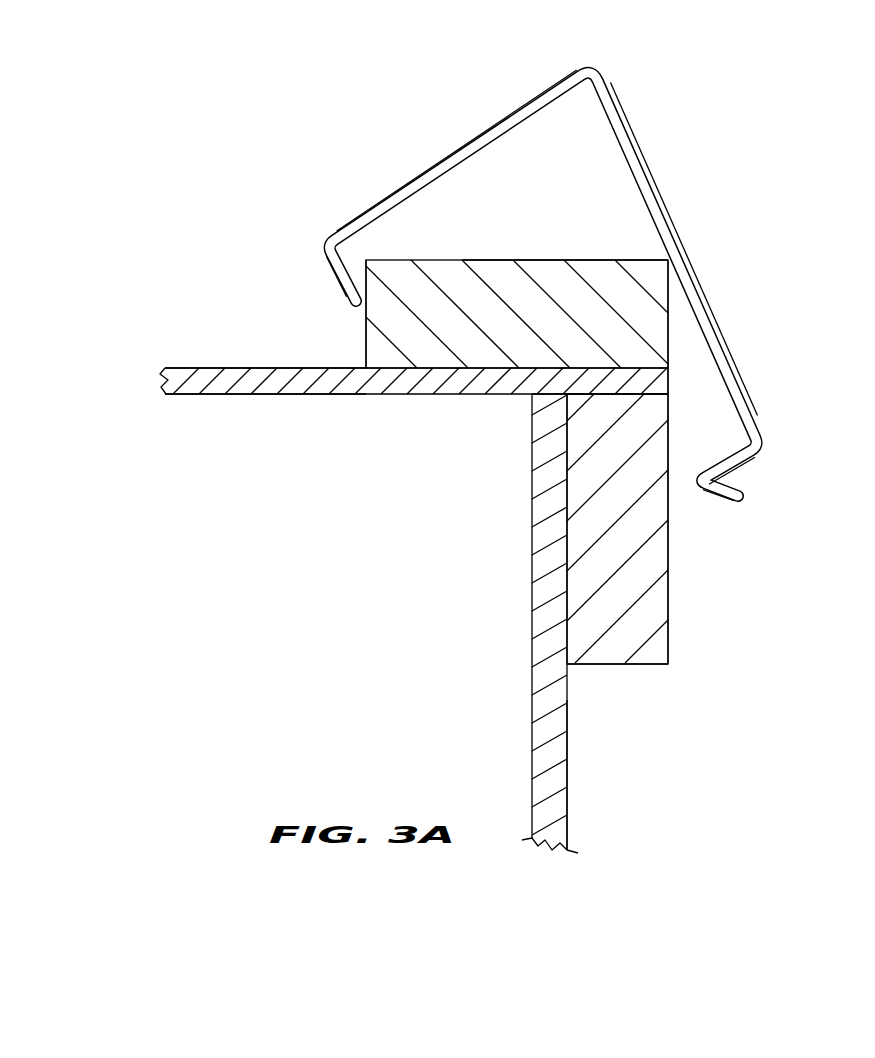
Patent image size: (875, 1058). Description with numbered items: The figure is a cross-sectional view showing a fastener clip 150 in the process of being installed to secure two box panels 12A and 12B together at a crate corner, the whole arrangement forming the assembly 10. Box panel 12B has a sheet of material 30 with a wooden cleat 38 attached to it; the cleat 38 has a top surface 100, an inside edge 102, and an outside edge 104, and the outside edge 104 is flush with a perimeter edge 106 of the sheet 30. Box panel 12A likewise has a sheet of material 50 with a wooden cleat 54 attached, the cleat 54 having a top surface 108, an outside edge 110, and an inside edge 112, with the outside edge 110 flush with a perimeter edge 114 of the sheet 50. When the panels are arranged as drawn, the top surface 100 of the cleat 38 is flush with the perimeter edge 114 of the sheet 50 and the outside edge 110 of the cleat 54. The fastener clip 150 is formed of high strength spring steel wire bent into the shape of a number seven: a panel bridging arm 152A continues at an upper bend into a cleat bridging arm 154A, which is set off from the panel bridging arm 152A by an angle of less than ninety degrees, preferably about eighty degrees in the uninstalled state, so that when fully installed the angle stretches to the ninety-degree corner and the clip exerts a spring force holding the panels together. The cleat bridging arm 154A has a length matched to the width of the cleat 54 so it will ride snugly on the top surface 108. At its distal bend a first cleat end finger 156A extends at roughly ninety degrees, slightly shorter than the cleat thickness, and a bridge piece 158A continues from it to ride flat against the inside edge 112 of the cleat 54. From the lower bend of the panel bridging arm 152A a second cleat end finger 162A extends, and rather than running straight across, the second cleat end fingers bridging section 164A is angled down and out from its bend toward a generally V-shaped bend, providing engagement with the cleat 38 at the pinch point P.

The assembly 10 is at (260, 588).
The box panel 12A is at (182, 442).
The box panel 12B is at (626, 766).
The sheet of material 30 is at (547, 620).
The wooden cleat 38 is at (643, 607).
The sheet of material 50 is at (430, 383).
The wooden cleat 54 is at (555, 280).
The top surface 100 is at (668, 552).
The inside edge 102 is at (608, 668).
The outside edge 104 is at (604, 398).
The perimeter edge 106 is at (553, 397).
The top surface 108 is at (485, 258).
The outside edge 110 is at (668, 327).
The inside edge 112 is at (365, 345).
The perimeter edge 114 is at (668, 385).
The fastener clip 150 is at (681, 103).
The panel bridging arm 152A is at (655, 187).
The cleat bridging arm 154A is at (435, 157).
The first cleat end finger 156A is at (328, 280).
The bridge piece 158A is at (358, 318).
The second cleat end finger 162A is at (757, 470).
The second cleat end fingers bridging section 164A is at (717, 500).
The pinch point P is at (746, 484).